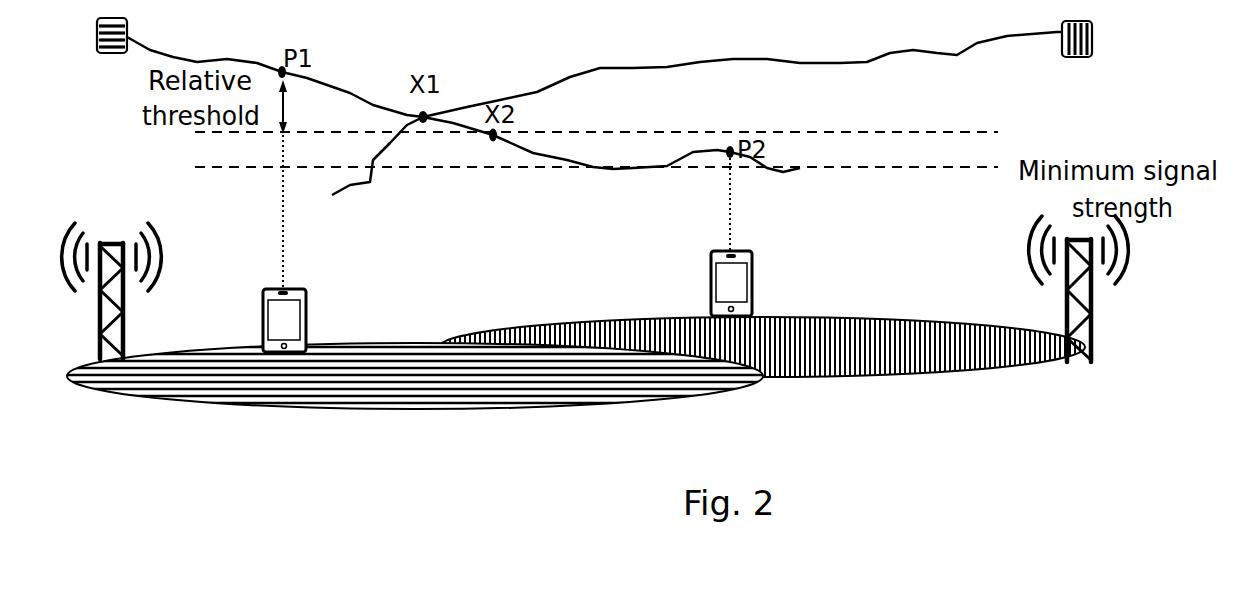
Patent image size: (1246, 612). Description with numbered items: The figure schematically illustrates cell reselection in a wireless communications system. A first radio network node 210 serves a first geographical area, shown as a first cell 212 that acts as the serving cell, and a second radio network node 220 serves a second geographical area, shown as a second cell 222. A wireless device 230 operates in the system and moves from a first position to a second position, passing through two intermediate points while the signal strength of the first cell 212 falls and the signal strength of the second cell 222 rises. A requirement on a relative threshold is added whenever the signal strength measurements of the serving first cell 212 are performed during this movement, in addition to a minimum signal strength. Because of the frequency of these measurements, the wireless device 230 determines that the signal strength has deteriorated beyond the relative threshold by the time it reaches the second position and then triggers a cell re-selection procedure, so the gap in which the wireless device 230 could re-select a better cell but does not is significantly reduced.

The first radio network node 210 is at (125, 303).
The first cell 212 is at (157, 398).
The second radio network node 220 is at (1093, 307).
The second cell 222 is at (1010, 368).
The wireless device 230 is at (306, 306).